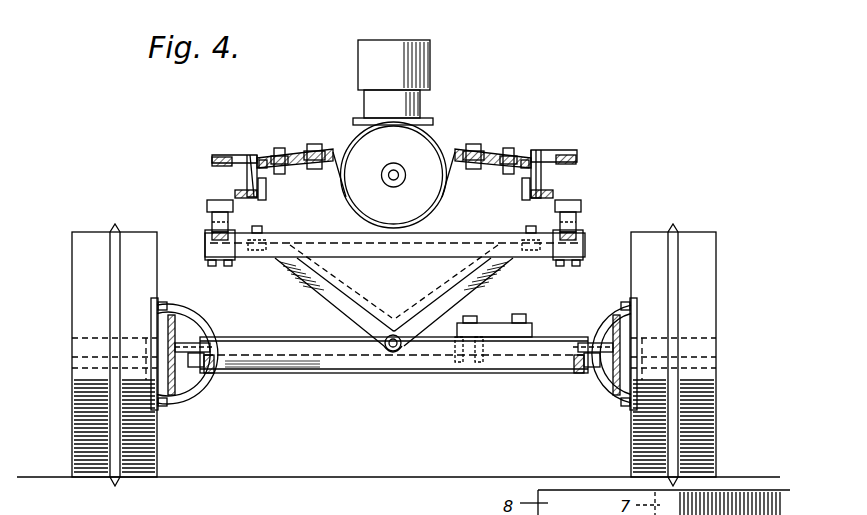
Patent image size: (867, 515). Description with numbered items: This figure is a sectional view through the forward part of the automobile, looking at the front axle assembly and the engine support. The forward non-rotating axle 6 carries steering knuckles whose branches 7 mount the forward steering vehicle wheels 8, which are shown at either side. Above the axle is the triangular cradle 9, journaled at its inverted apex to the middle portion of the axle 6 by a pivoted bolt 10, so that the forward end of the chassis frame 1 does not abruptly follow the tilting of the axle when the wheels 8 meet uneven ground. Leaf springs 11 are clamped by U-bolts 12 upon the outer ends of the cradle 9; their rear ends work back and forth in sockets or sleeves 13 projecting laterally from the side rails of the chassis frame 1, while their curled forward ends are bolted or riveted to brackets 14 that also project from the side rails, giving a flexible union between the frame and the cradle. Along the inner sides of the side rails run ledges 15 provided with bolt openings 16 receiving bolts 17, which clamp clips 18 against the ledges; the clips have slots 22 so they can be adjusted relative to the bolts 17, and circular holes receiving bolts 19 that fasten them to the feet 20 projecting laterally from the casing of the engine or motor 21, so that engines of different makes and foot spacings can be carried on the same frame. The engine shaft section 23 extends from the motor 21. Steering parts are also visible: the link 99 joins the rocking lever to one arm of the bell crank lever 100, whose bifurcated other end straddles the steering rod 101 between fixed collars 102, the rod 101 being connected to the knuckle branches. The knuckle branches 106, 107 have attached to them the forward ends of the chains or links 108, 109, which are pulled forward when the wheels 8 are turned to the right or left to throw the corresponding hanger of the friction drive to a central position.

The chassis frame 1 is at (250, 155).
The forward non-rotating axle 6 is at (318, 358).
The steering knuckle branches 7 is at (72, 355).
The forward steering vehicle wheels 8 is at (85, 258).
The triangular cradle 9 is at (349, 307).
The pivoted bolt 10 is at (393, 353).
The leaf springs 11 is at (213, 161).
The U-bolts 12 is at (207, 238).
The sockets or sleeves 13 is at (207, 200).
The brackets 14 is at (222, 156).
The ledges 15 is at (287, 170).
The bolt openings 16 is at (279, 166).
The bolts 17 is at (279, 148).
The clips 18 is at (264, 160).
The bolts 19 is at (318, 144).
The feet 20 is at (343, 148).
The engine or motor 21 is at (394, 175).
The slots 22 is at (326, 162).
The engine shaft section 23 is at (394, 180).
The link 99 is at (536, 314).
The bell crank lever 100 is at (491, 323).
The steering rod 101 is at (200, 342).
The collars 102 is at (479, 362).
The knuckle branch 106 is at (194, 368).
The knuckle branch 107 is at (592, 372).
The chain or link 108 is at (582, 366).
The chain or link 109 is at (205, 370).